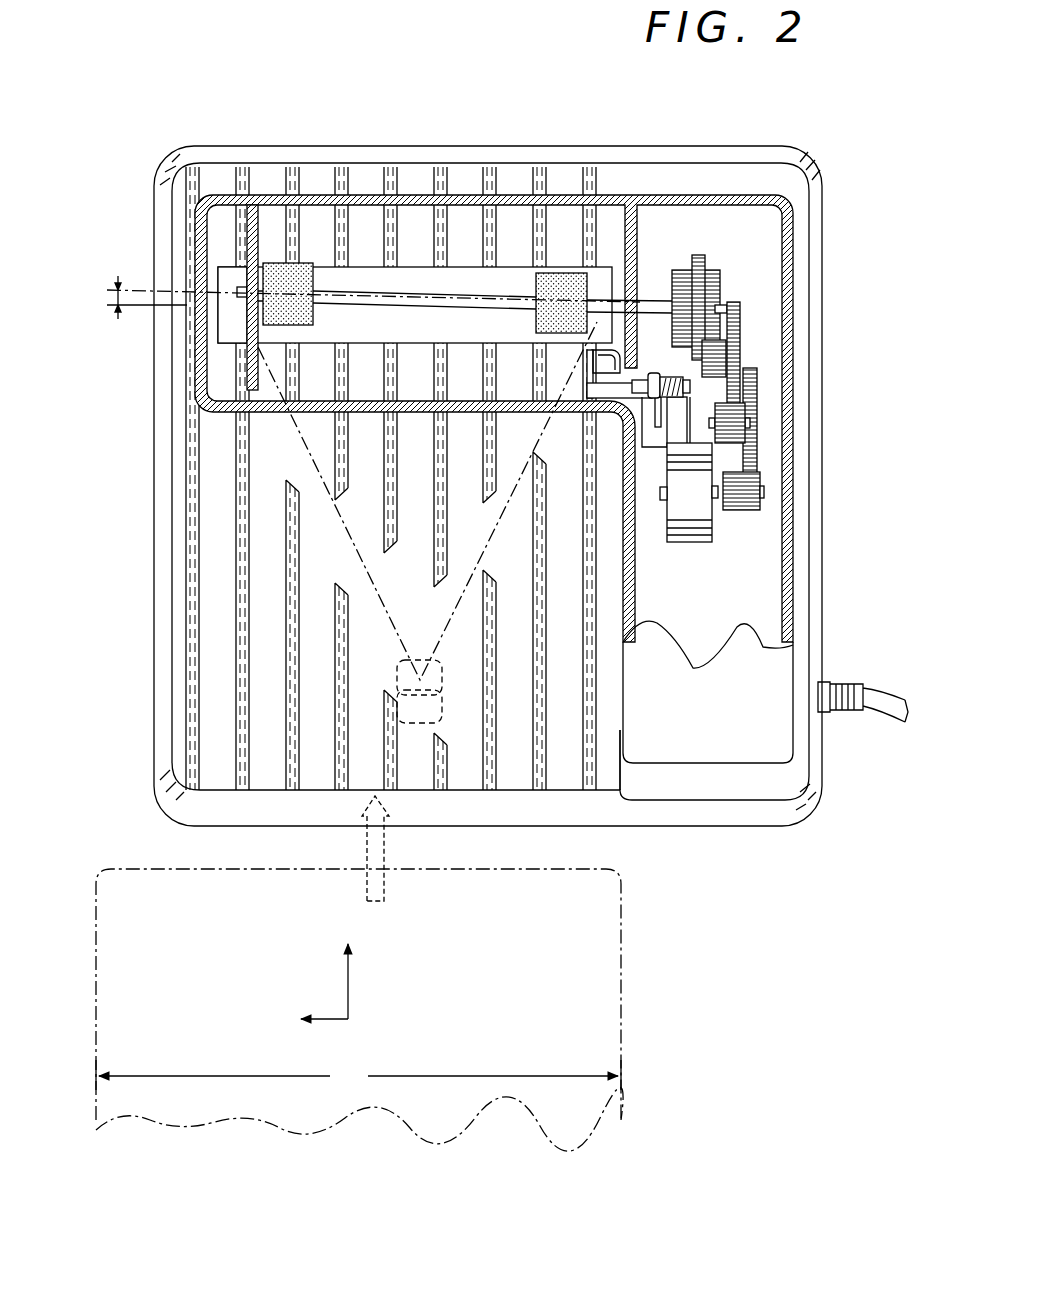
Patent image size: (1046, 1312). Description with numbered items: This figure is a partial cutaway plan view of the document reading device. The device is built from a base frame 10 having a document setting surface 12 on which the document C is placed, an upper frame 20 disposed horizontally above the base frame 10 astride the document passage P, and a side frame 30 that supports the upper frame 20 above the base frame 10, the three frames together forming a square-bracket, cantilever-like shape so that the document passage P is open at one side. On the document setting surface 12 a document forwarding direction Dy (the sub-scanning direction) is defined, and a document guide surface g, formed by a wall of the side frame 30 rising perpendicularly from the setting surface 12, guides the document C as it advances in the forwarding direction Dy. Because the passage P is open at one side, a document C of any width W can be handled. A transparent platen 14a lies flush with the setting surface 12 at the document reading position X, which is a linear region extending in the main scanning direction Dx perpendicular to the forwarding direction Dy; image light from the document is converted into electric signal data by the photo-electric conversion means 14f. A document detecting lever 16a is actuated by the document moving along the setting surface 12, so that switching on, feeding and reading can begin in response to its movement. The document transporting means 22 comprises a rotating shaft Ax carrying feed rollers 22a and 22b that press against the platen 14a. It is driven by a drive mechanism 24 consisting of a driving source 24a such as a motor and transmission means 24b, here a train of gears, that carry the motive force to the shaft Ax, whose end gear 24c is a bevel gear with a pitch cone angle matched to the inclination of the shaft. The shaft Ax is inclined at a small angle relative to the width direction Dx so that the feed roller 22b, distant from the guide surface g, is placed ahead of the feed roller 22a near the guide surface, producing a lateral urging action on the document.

The base frame 10 is at (150, 558).
The document setting surface 12 is at (210, 733).
The transparent platen 14a is at (228, 283).
The photo-electric conversion means 14f is at (398, 686).
The document detecting lever 16a is at (643, 365).
The upper frame 20 is at (211, 144).
The document transporting means 22 is at (371, 205).
The feed roller 22a is at (548, 290).
The feed roller 22b is at (303, 278).
The drive mechanism 24 is at (780, 395).
The driving source 24a is at (717, 518).
The transmission means 24b is at (753, 462).
The end gear 24c is at (707, 257).
The side frame 30 is at (723, 735).
The document guide surface g is at (623, 730).
The document passage P is at (270, 422).
The document reading position X is at (146, 306).
The rotating shaft Ax is at (403, 293).
The document C is at (621, 970).
The width of the document W is at (358, 1075).
The main scanning direction Dx is at (305, 1022).
The document forwarding direction Dy is at (346, 966).